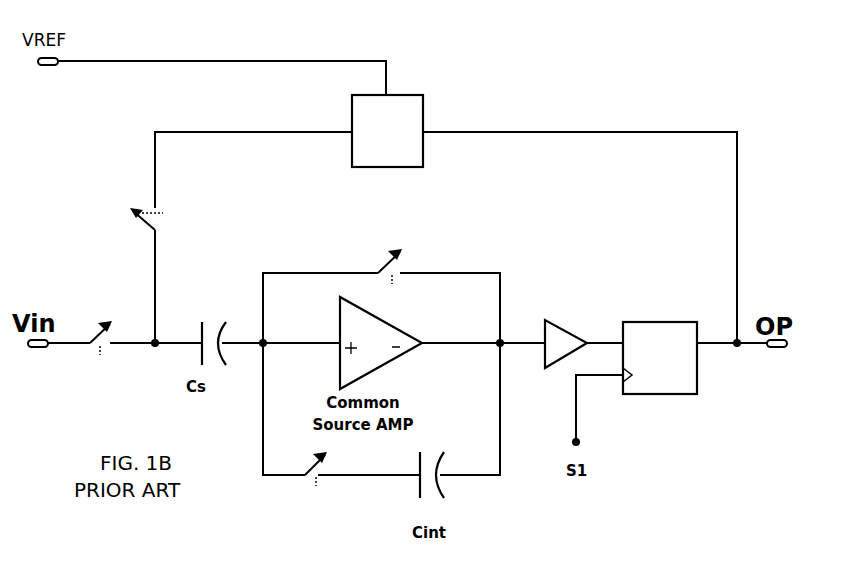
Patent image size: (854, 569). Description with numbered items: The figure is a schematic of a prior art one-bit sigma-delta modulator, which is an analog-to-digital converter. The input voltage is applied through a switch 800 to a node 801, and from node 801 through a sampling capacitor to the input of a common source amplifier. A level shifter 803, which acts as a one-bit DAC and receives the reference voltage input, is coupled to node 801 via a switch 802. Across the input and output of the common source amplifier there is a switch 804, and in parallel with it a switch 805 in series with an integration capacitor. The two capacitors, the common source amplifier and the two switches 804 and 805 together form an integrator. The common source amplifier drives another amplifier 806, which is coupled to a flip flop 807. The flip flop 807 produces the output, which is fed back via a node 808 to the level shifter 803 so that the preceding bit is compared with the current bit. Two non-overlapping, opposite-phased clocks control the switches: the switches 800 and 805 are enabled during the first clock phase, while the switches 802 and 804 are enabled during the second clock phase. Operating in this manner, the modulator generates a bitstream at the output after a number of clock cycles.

The switch 800 is at (90, 364).
The node 801 is at (153, 359).
The switch 802 is at (167, 210).
The level shifter 803 is at (397, 155).
The switch 804 is at (399, 266).
The switch 805 is at (299, 496).
The amplifier 806 is at (562, 326).
The flip flop 807 is at (660, 342).
The node 808 is at (742, 364).